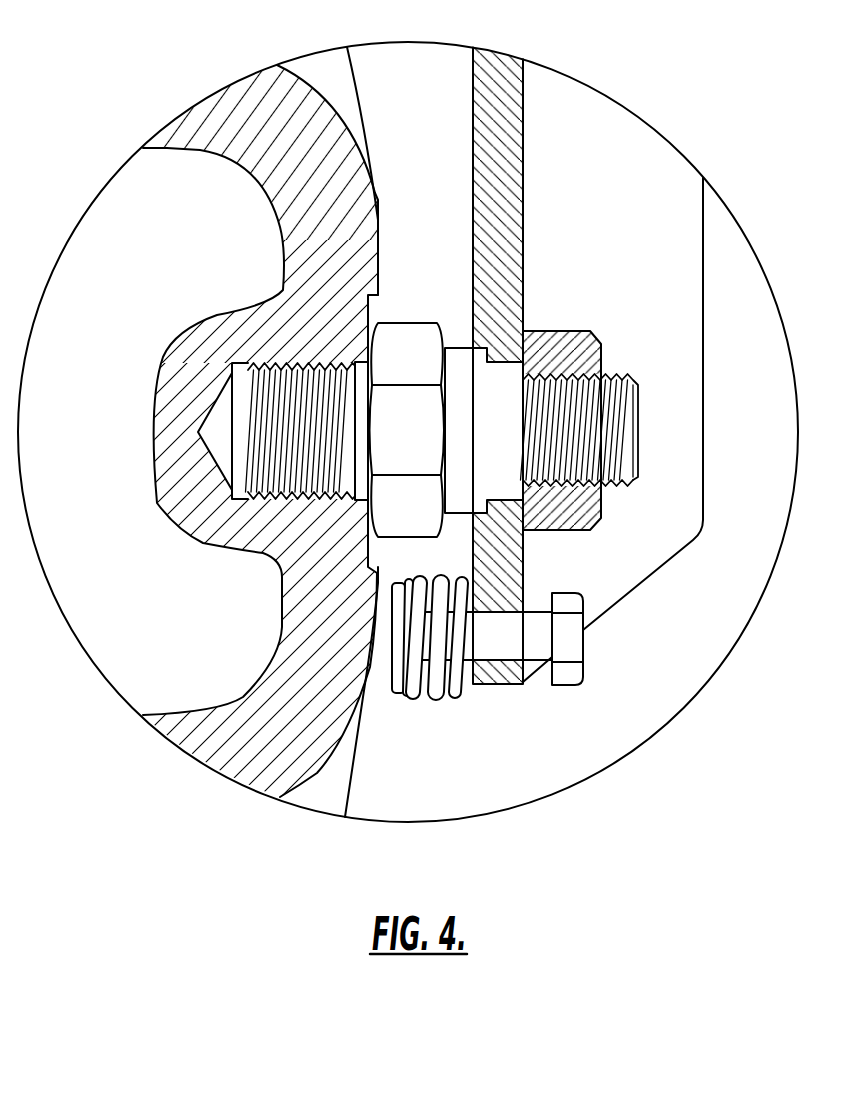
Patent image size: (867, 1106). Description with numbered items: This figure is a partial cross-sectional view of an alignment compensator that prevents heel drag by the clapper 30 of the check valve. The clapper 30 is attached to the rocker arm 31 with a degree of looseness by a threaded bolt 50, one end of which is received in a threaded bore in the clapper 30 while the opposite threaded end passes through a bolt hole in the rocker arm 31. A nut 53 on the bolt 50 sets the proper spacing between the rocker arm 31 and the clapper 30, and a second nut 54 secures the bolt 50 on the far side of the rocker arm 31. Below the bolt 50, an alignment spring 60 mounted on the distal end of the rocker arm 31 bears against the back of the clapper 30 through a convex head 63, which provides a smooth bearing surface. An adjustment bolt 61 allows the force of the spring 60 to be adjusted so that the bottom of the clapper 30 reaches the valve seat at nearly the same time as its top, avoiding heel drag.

The clapper 30 is at (240, 748).
The rocker arm 31 is at (667, 307).
The threaded bolt 50 is at (253, 427).
The nut 53 is at (410, 342).
The nut 54 is at (570, 508).
The alignment spring 60 is at (430, 687).
The adjustment bolt 61 is at (570, 673).
The convex head 63 is at (385, 655).